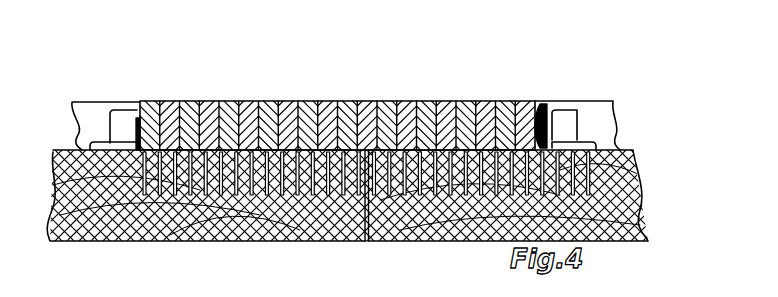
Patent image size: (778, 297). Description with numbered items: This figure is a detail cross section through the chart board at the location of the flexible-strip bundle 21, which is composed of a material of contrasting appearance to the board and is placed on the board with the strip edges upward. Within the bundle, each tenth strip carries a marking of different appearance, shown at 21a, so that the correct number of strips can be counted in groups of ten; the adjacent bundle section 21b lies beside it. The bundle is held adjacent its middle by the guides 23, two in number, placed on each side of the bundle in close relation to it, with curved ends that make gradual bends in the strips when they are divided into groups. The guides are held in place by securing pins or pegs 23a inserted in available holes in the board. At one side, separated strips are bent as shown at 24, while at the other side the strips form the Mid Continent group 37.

The flexible-strip bundle 21 is at (426, 99).
The marking on tenth strip 21a is at (152, 232).
The right base section 21b is at (420, 234).
The guides 23 is at (136, 96).
The securing pins or pegs 23a is at (139, 116).
The bent strip side 24 is at (88, 110).
The Mid Continent strip group 37 is at (607, 118).